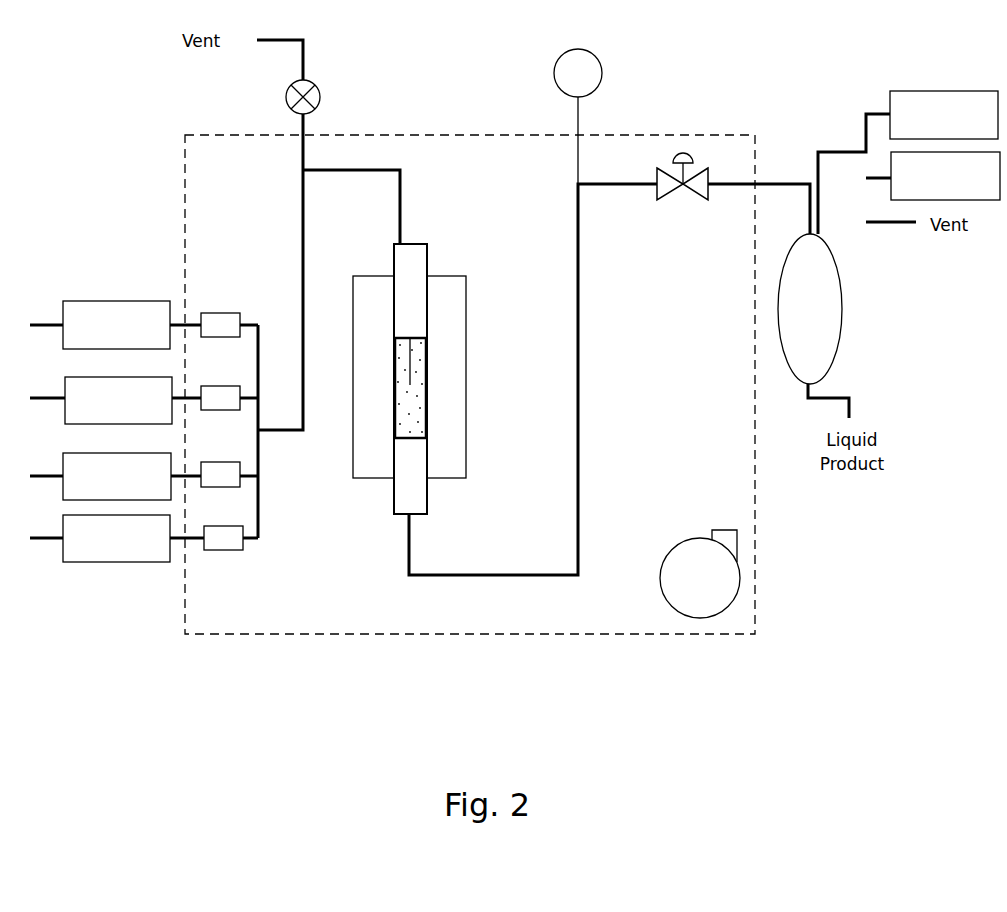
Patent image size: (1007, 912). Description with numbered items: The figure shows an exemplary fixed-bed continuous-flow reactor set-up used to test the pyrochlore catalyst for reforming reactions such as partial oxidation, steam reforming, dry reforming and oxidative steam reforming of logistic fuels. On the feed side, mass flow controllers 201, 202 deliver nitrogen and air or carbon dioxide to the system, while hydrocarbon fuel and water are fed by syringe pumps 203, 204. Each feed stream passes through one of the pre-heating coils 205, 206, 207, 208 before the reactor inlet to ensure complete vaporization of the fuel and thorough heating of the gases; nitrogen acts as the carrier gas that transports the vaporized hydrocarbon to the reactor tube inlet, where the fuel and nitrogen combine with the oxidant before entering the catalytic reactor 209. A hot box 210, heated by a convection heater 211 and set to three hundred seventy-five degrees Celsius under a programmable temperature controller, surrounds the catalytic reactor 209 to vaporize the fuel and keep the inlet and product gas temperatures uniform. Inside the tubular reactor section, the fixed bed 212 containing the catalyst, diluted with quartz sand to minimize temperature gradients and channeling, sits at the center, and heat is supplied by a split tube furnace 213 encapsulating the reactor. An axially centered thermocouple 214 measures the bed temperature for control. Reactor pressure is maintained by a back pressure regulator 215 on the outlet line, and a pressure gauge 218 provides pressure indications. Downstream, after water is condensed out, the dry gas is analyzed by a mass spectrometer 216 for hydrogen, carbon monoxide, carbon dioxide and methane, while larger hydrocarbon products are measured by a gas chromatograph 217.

The mass flow controller 201 is at (115, 325).
The mass flow controller 202 is at (115, 476).
The syringe pump 203 is at (115, 400).
The syringe pump 204 is at (117, 538).
The pre-heating coil 205 is at (229, 325).
The pre-heating coil 206 is at (229, 398).
The pre-heating coil 207 is at (229, 474).
The pre-heating coil 208 is at (231, 538).
The catalytic reactor 209 is at (418, 264).
The hot box 210 is at (413, 634).
The convection heater 211 is at (700, 574).
The fixed bed 212 is at (405, 398).
The split tube furnace 213 is at (450, 303).
The thermocouple 214 is at (410, 355).
The back pressure regulator 215 is at (683, 157).
The mass spectrometer 216 is at (945, 176).
The gas chromatograph 217 is at (944, 115).
The pressure gauge 218 is at (578, 116).